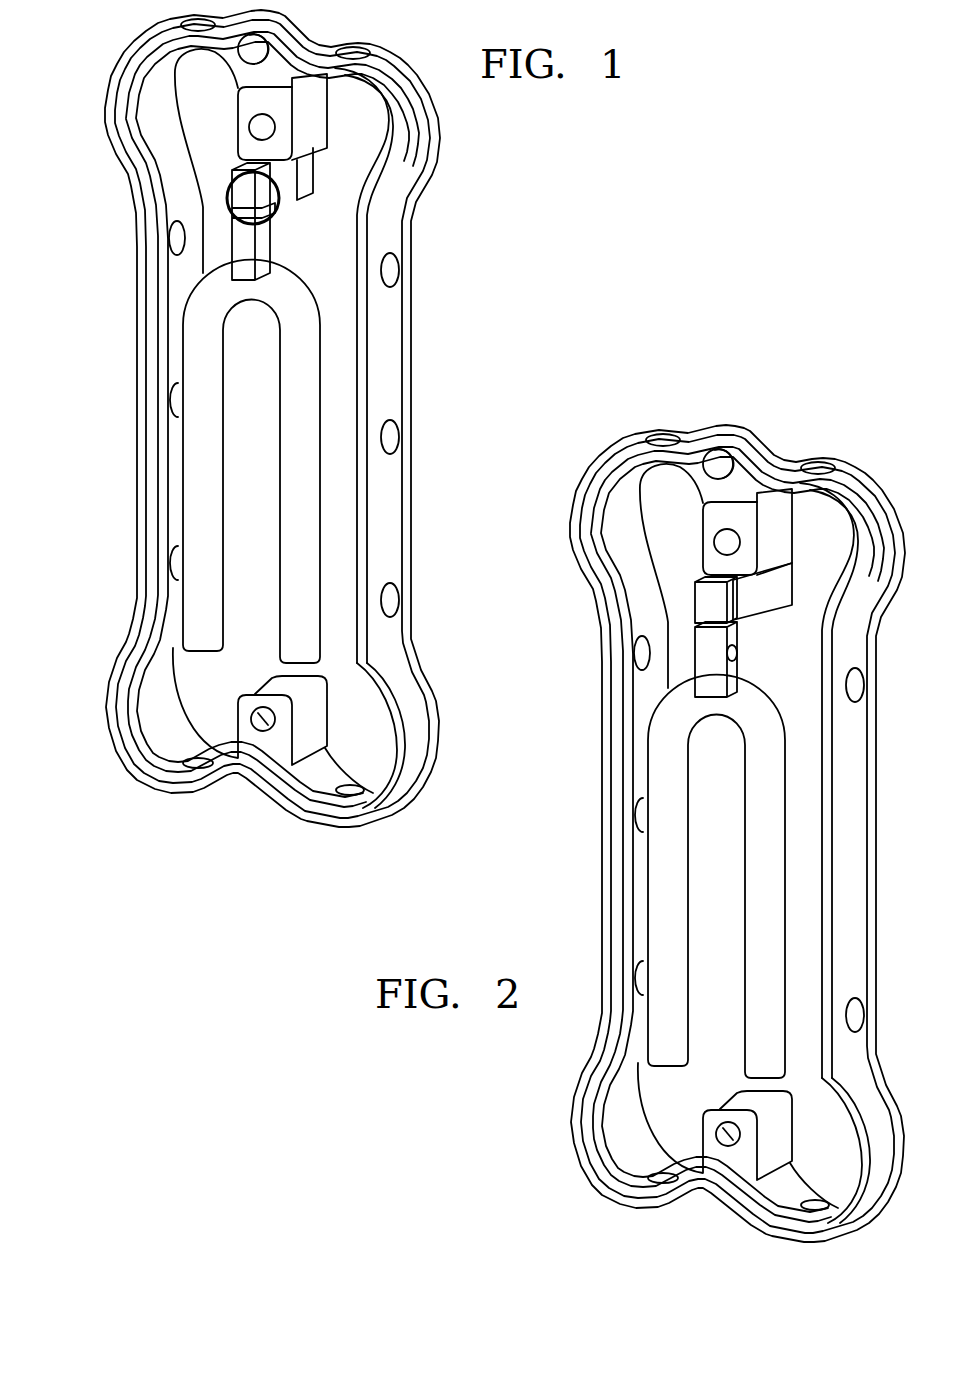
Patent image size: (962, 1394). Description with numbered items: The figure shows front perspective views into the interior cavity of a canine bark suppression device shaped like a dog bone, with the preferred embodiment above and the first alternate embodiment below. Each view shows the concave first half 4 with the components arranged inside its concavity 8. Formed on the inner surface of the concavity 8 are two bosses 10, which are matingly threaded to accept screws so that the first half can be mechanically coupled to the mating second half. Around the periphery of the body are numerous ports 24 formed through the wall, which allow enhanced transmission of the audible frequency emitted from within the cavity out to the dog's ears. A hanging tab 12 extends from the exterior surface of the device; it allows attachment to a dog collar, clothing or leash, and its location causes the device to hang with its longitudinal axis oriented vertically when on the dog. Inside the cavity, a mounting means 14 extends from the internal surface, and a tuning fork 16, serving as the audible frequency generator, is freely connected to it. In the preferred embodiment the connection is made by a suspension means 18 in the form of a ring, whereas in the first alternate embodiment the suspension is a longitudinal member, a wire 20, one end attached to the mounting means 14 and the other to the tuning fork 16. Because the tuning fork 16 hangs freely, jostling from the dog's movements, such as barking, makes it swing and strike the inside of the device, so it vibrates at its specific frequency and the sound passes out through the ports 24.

In FIG. 1, the concave first half 4 is at (387, 80).
In FIG. 1, the concavity 8 is at (200, 95).
In FIG. 1, the boss 10 is at (263, 719).
In FIG. 2, the boss 10 is at (712, 1185).
In FIG. 2, the hanging tab 12 is at (737, 803).
In FIG. 1, the mounting means 14 is at (303, 173).
In FIG. 1, the tuning fork 16 is at (197, 505).
In FIG. 1, the suspension means 18 is at (312, 187).
In FIG. 2, the wire 20 is at (621, 637).
In FIG. 1, the port 24 is at (393, 437).